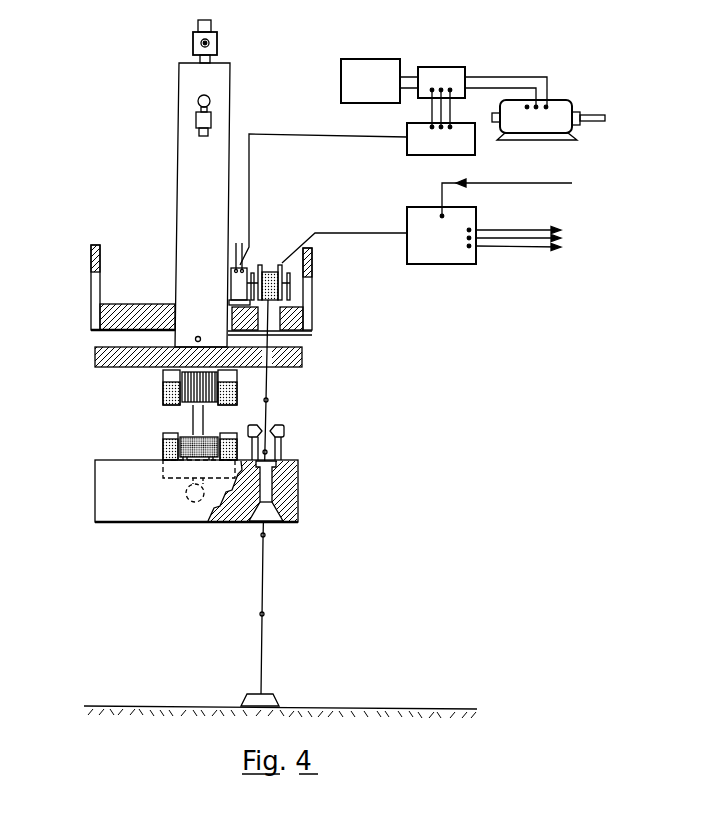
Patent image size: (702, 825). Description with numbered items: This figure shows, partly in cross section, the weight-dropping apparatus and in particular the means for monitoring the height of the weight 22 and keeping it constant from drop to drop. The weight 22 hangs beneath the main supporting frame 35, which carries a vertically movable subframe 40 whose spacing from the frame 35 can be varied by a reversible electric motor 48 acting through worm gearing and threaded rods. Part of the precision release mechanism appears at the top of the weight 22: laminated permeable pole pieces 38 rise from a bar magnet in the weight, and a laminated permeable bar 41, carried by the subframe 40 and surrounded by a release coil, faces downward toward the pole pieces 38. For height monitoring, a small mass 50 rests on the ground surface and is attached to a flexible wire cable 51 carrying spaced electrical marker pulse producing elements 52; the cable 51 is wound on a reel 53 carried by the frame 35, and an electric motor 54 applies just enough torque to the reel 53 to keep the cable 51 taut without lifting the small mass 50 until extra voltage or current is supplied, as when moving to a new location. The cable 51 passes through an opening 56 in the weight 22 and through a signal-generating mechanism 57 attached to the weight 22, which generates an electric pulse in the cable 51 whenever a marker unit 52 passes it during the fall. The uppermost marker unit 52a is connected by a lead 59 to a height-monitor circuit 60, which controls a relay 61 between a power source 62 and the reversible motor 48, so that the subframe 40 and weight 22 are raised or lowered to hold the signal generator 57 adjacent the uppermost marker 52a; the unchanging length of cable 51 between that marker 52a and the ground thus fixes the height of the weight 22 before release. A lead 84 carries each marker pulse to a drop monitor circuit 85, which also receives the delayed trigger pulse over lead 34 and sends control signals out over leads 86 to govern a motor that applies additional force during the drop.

The weight 22 is at (105, 485).
The lead 34 is at (552, 182).
The supporting frame 35 is at (100, 316).
The pole pieces 38 is at (163, 446).
The subframe 40 is at (95, 352).
The laminated permeable bar 41 is at (163, 390).
The reversible electric motor 48 is at (555, 107).
The small mass 50 is at (270, 695).
The flexible wire cable 51 is at (263, 581).
The marker pulse producing elements 52 is at (270, 450).
The uppermost marker unit 52a is at (270, 400).
The reel 53 is at (283, 287).
The electric motor 54 is at (247, 263).
The opening 56 is at (272, 489).
The signal-generating mechanism 57 is at (284, 431).
The lead 59 is at (269, 134).
The height-monitor circuit 60 is at (407, 140).
The relay 61 is at (437, 68).
The power source 62 is at (355, 59).
The lead 84 is at (375, 233).
The drop monitor circuit 85 is at (407, 206).
The leads 86 is at (568, 248).